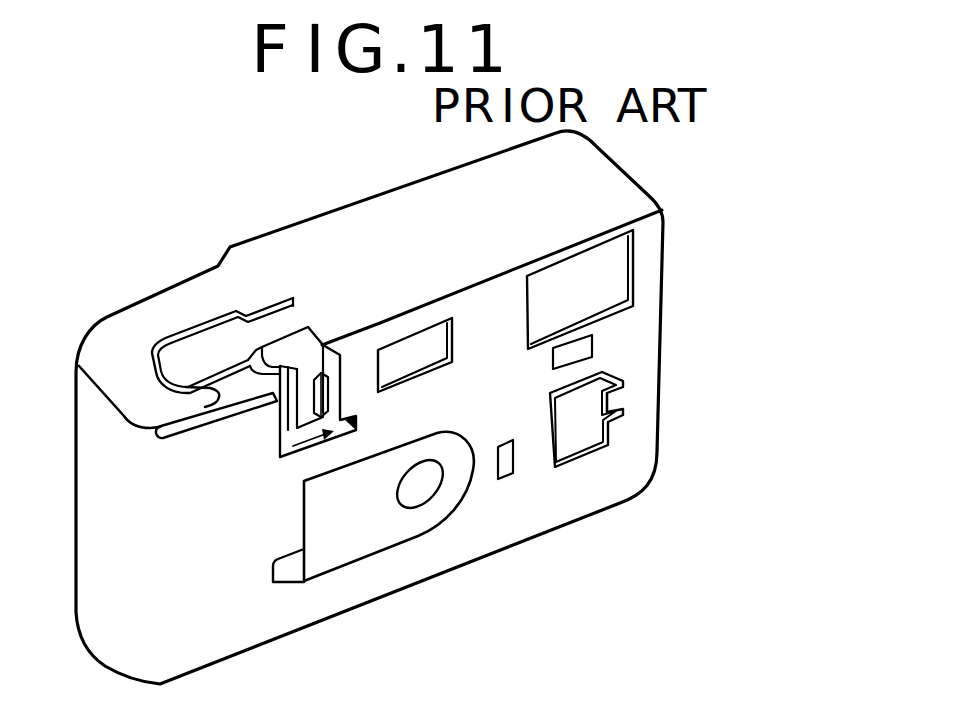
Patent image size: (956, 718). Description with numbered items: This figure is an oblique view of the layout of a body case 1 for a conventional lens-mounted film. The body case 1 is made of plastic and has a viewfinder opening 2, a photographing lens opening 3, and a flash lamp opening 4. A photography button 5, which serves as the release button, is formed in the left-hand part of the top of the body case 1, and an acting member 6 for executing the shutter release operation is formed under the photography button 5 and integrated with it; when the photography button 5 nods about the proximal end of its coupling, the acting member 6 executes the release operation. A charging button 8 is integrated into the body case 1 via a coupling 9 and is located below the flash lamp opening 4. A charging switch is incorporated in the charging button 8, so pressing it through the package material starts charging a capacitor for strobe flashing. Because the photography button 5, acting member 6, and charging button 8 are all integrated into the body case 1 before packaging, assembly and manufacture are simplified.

The body case 1 is at (353, 200).
The viewfinder opening 2 is at (440, 350).
The photographing lens opening 3 is at (420, 487).
The flash lamp opening 4 is at (620, 282).
The photography button 5 is at (183, 362).
The acting member 6 is at (305, 418).
The charging button 8 is at (577, 423).
The coupling 9 is at (615, 402).